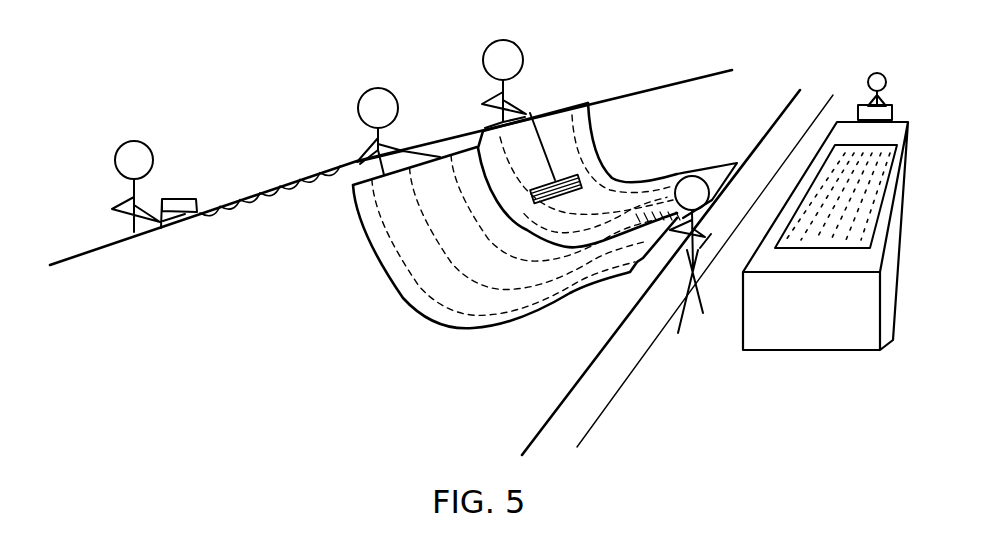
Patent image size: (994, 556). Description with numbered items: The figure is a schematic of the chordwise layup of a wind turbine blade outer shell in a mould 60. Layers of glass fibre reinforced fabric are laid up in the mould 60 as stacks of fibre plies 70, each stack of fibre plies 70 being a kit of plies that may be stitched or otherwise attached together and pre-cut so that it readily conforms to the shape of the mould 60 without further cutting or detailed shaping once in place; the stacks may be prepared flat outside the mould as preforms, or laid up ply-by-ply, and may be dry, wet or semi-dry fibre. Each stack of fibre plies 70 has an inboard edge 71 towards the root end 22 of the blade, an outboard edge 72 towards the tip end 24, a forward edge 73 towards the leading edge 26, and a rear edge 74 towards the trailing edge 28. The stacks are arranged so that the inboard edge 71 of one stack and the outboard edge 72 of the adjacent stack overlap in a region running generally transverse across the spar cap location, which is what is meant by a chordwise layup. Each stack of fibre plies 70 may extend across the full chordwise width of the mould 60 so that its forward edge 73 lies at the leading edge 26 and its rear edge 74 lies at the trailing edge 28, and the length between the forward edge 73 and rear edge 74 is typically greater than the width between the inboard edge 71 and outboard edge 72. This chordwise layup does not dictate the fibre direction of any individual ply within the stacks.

The root end 22 is at (743, 97).
The tip end 24 is at (375, 347).
The leading edge 26 is at (300, 158).
The trailing edge 28 is at (615, 350).
The mould 60 is at (697, 107).
The stack of fibre plies 70 is at (619, 188).
The inboard edge 71 is at (385, 277).
The outboard edge 72 is at (487, 198).
The forward edge 73 is at (456, 150).
The rear edge 74 is at (715, 167).